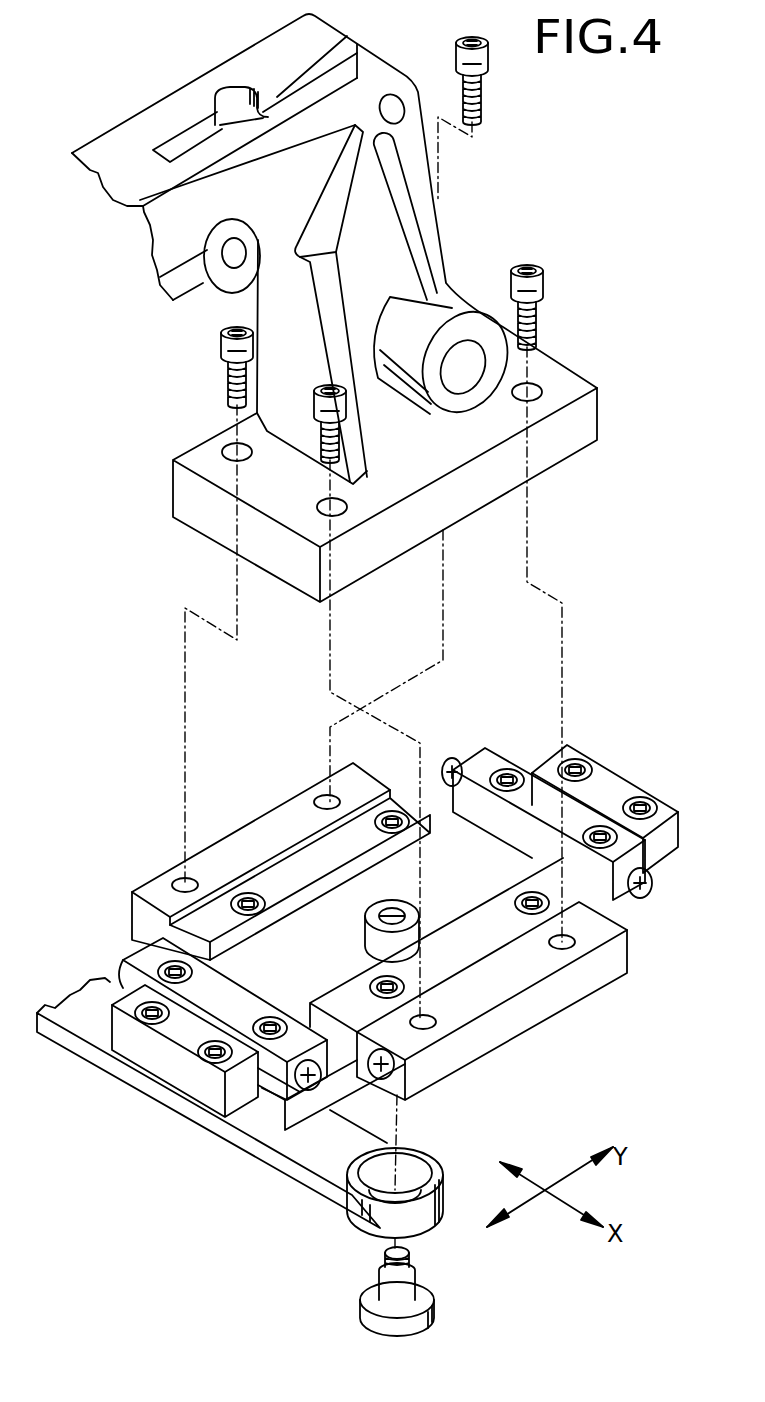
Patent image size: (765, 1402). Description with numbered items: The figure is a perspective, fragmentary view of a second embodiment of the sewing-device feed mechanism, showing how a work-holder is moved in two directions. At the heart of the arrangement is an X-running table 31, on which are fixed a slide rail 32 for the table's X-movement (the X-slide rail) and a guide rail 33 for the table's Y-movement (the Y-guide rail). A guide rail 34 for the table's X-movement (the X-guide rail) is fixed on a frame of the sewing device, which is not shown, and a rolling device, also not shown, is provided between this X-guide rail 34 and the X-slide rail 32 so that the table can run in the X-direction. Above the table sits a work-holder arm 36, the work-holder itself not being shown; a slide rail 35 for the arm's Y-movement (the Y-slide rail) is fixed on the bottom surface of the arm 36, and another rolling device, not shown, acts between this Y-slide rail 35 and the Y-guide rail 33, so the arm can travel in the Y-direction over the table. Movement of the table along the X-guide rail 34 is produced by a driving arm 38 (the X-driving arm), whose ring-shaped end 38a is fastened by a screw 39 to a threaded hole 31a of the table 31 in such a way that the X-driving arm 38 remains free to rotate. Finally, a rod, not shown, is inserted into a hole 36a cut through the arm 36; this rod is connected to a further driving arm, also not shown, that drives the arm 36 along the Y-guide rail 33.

The X-running table 31 is at (480, 870).
The threaded hole 31a is at (367, 922).
The X-slide rail 32 is at (530, 793).
The Y-guide rail 33 is at (437, 790).
The X-guide rail 34 is at (610, 790).
The Y-slide rail 35 is at (263, 835).
The work-holder arm 36 is at (147, 125).
The hole 36a is at (470, 330).
The X-driving arm 38 is at (227, 1133).
The ring portion of lever 38a is at (443, 1168).
The screw 39 is at (387, 1283).